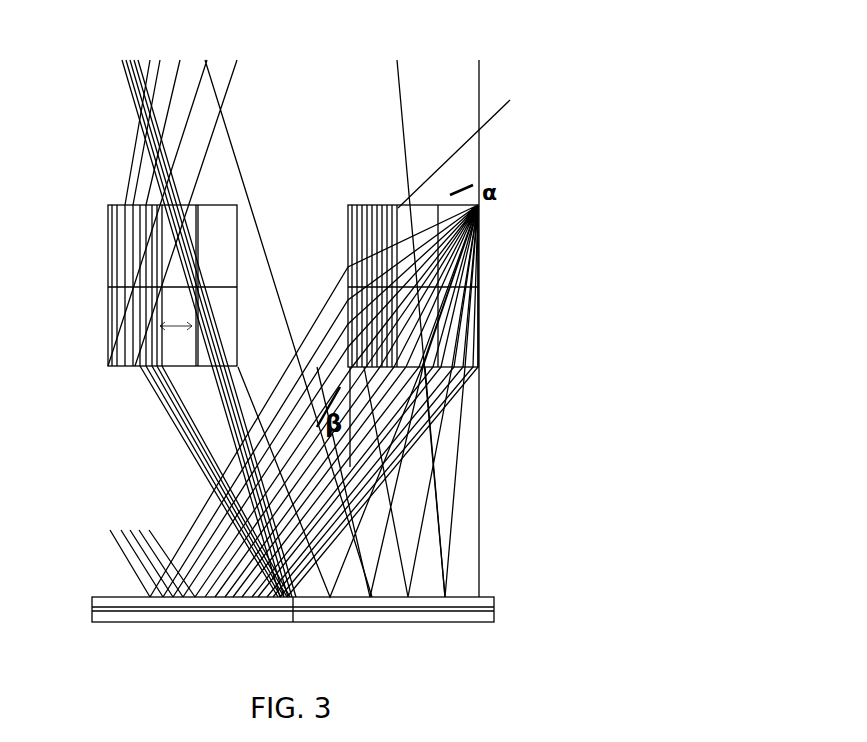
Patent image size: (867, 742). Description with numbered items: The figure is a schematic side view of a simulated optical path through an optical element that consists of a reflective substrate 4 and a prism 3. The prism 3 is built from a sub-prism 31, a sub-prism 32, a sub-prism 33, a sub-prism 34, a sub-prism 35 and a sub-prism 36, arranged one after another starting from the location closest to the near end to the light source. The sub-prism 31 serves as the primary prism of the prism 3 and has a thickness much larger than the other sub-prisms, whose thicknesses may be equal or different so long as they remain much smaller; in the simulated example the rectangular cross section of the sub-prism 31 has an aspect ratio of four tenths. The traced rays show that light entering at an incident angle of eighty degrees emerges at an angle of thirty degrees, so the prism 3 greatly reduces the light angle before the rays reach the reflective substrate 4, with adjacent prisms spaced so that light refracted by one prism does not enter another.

The prism 3 is at (234, 297).
The sub-prism 31 is at (195, 377).
The sub-prism 32 is at (178, 372).
The sub-prism 33 is at (148, 368).
The sub-prism 34 is at (135, 368).
The sub-prism 35 is at (122, 368).
The sub-prism 36 is at (112, 368).
The reflective substrate 4 is at (478, 608).